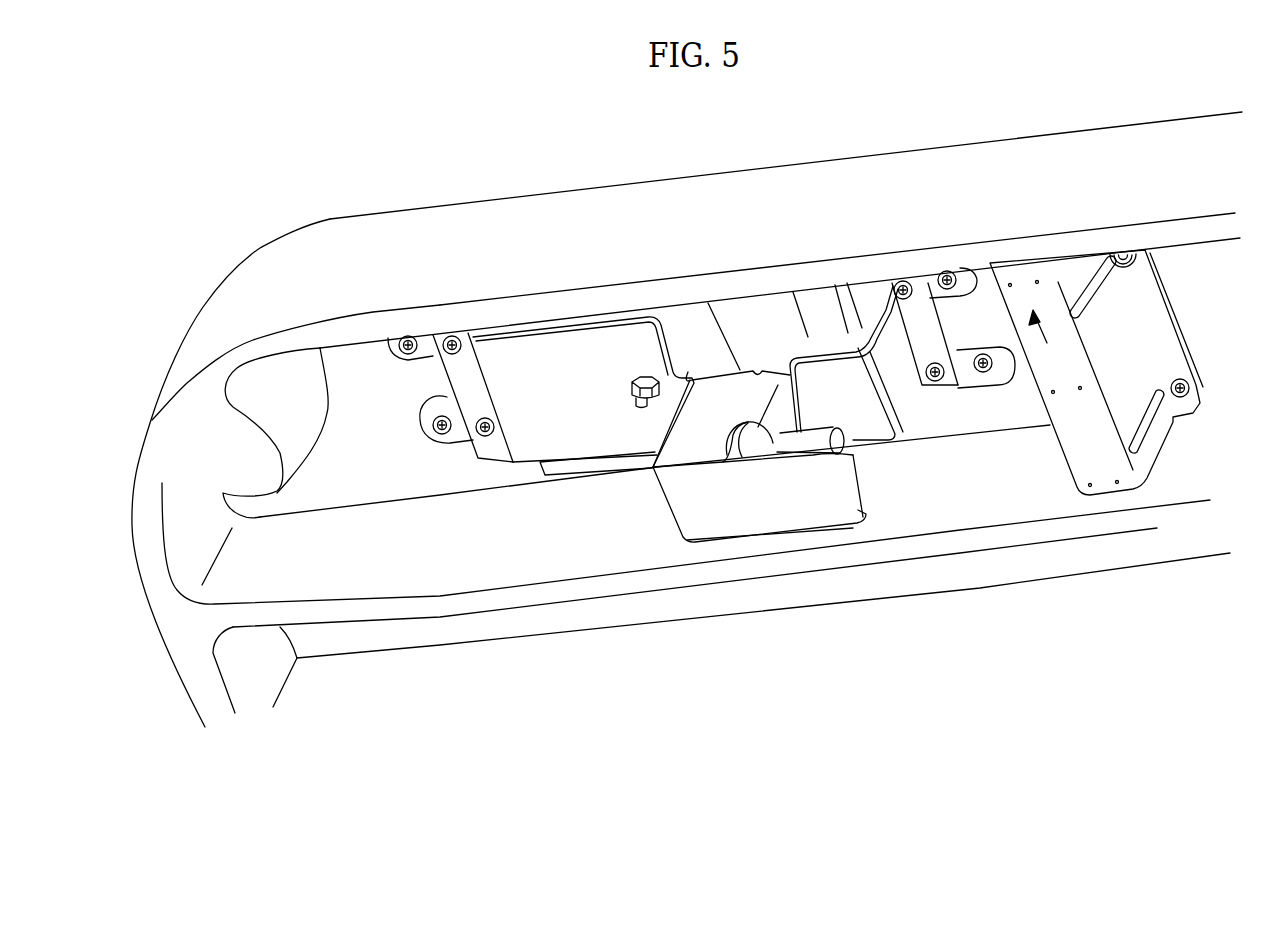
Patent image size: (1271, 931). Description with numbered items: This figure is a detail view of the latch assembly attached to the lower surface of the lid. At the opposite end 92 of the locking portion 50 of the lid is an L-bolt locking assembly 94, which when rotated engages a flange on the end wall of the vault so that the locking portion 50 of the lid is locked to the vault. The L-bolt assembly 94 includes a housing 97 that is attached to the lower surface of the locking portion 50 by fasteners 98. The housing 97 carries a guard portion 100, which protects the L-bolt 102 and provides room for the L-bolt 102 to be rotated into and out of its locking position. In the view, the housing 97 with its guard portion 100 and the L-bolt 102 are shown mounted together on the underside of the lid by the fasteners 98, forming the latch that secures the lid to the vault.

The locking portion 50 is at (1030, 183).
The opposite end 92 is at (347, 477).
The L-bolt locking assembly 94 is at (660, 518).
The housing 97 is at (890, 403).
The fasteners 98 is at (446, 340).
The guard portion 100 is at (820, 493).
The L-bolt 102 is at (757, 443).